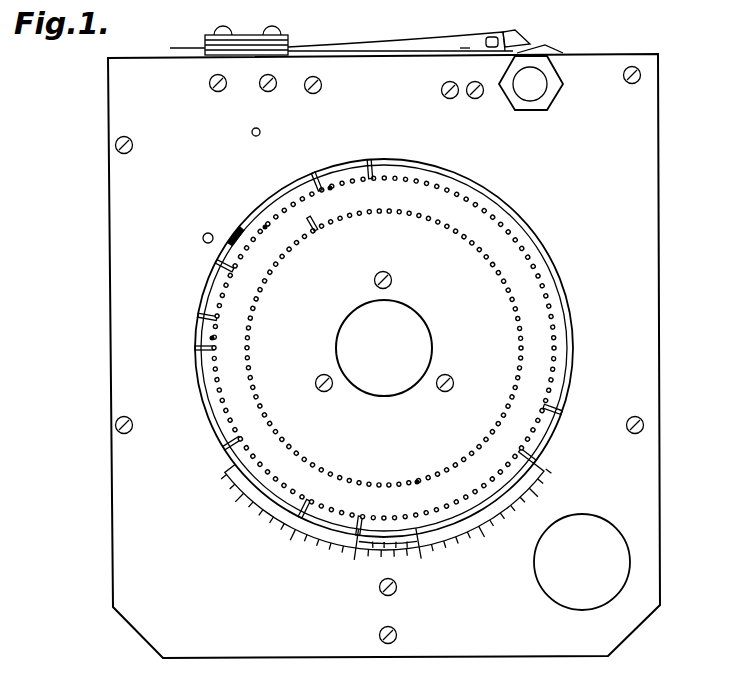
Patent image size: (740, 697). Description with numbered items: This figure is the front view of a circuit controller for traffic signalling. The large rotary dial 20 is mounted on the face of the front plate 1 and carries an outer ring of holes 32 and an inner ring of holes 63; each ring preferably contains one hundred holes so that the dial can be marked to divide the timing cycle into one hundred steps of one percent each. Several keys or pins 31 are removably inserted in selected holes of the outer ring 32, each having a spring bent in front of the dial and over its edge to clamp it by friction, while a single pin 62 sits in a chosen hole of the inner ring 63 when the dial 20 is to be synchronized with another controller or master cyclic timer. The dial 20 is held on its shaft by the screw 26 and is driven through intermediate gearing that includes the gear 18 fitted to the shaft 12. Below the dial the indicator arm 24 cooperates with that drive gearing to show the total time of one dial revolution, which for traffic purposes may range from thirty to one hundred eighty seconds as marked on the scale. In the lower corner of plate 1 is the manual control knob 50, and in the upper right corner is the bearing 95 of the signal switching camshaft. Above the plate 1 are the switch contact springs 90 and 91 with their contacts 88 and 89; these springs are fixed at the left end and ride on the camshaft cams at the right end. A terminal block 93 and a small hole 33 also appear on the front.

The front plate 1 is at (658, 157).
The shaft 12 is at (204, 243).
The gear 18 is at (241, 227).
The rotary dial 20 is at (573, 386).
The indicator arm 24 is at (423, 535).
The screw 26 is at (431, 340).
The keys or pins 31 is at (321, 190).
The outer ring of holes 32 is at (447, 191).
The hole 33 is at (260, 130).
The manual control knob 50 is at (614, 536).
The single pin 62 is at (312, 224).
The inner ring of holes 63 is at (438, 224).
The contact 88 is at (496, 37).
The contact 89 is at (519, 37).
The switch contact spring 90 is at (438, 42).
The switch contact spring 91 is at (464, 50).
The terminal block 93 is at (268, 31).
The bearing 95 is at (548, 80).